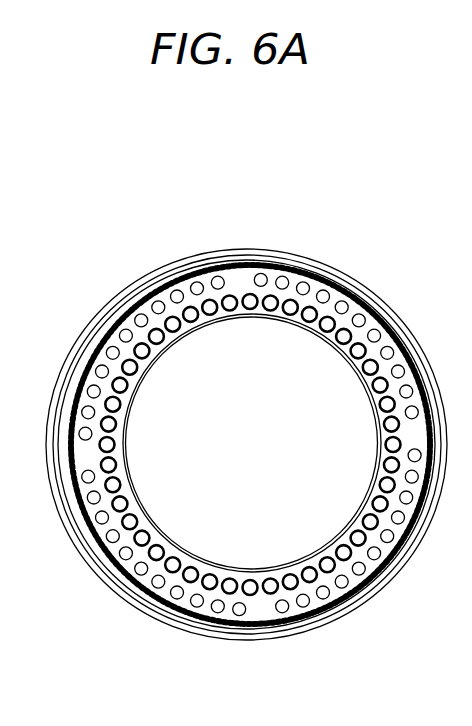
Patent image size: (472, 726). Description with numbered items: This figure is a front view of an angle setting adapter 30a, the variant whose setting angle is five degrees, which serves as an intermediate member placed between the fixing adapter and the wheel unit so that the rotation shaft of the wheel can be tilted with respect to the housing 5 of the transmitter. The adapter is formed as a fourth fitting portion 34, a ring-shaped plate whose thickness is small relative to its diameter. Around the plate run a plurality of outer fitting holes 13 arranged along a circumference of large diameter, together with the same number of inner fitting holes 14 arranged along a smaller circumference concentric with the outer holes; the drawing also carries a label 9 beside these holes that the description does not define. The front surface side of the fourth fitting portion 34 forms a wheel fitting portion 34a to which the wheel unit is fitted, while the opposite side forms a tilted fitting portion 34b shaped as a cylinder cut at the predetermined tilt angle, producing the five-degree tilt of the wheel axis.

The angle setting adapter 30a is at (231, 441).
The outer fitting holes 13 is at (196, 632).
The fourth fitting portion 34 is at (283, 633).
The wheel fitting portion 34a is at (94, 414).
The tilted fitting portion 34b is at (52, 460).
The inner fitting holes 14 is at (190, 558).
The inner row holes 9 is at (253, 309).
The housing 5 is at (252, 440).